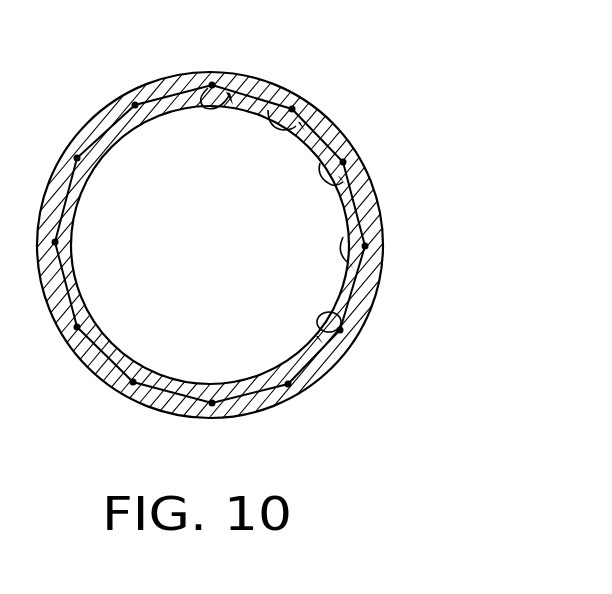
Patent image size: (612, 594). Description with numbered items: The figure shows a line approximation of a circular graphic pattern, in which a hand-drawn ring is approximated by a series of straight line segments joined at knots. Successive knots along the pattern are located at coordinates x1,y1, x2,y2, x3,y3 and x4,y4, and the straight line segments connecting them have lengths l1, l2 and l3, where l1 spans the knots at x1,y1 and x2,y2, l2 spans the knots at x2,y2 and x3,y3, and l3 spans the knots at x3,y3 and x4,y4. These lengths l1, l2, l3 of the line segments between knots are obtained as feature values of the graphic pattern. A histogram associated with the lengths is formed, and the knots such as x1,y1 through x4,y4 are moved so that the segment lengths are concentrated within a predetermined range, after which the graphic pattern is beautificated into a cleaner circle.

The knot x1,y1 is at (212, 85).
The knot x2,y2 is at (312, 103).
The knot x3,y3 is at (343, 162).
The knot x4,y4 is at (365, 246).
The line segment length l1 is at (250, 100).
The line segment length l2 is at (307, 132).
The line segment length l3 is at (350, 203).